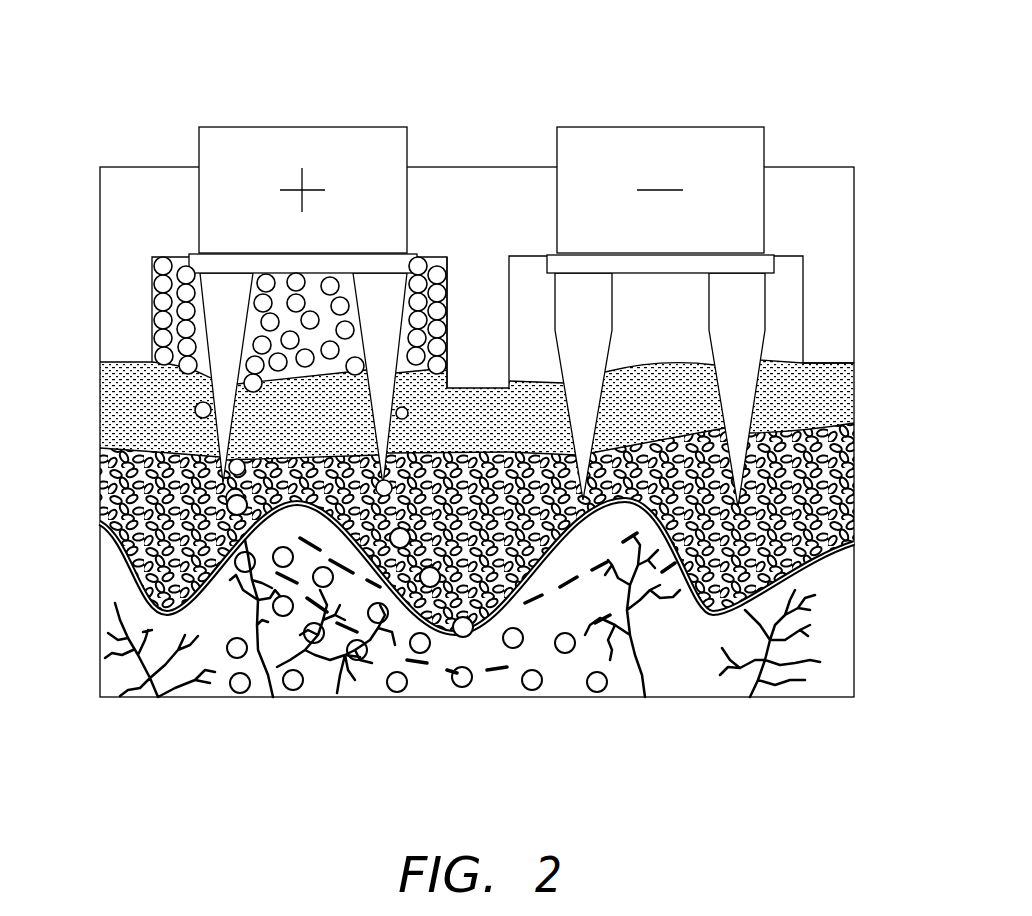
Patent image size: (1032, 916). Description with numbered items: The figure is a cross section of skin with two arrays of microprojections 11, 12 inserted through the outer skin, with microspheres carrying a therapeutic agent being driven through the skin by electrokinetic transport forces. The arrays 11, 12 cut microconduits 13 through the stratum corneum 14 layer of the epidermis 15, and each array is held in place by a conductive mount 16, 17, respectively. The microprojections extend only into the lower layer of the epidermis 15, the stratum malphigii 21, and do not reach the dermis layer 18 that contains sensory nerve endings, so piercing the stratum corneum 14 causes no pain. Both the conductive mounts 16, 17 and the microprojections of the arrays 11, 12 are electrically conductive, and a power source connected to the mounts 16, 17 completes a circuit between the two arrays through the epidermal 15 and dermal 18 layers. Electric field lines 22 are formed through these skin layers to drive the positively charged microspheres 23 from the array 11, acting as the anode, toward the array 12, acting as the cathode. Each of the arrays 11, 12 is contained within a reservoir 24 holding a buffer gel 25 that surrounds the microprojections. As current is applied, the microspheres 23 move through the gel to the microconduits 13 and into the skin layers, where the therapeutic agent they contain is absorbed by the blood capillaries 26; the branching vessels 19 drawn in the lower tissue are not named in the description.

The first array of microprojections 11 is at (382, 290).
The second array of microprojections 12 is at (580, 290).
The microconduits 13 is at (247, 403).
The stratum corneum 14 is at (848, 377).
The epidermis 15 is at (88, 450).
The conductive mount 16 is at (233, 140).
The conductive mount 17 is at (740, 142).
The dermis layer 18 is at (97, 587).
The blood vessel 19 is at (158, 697).
The stratum malphigii 21 is at (857, 480).
The electric field lines 22 is at (420, 668).
The microspheres 23 is at (153, 350).
The reservoirs 24 is at (178, 260).
The buffer gel 25 is at (417, 283).
The blood capillaries 26 is at (750, 697).